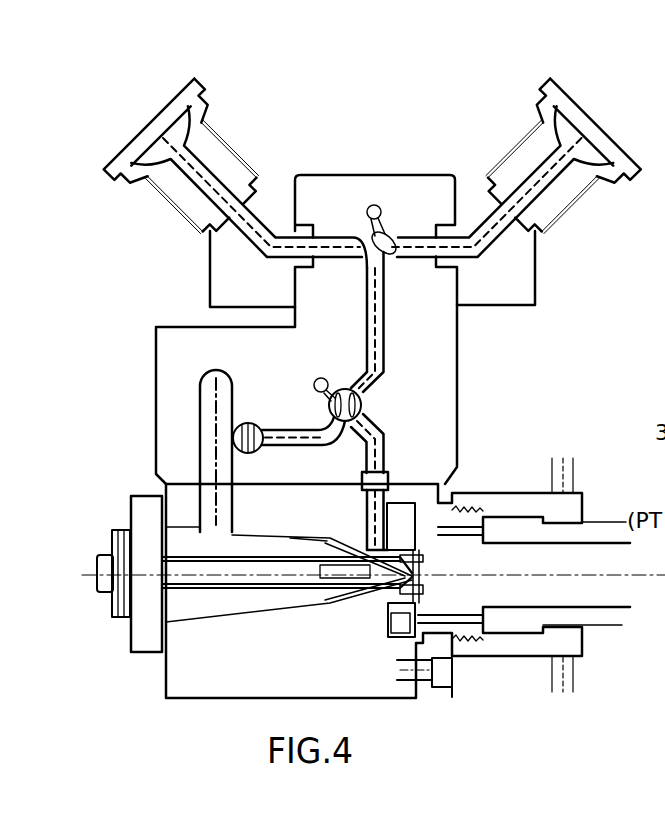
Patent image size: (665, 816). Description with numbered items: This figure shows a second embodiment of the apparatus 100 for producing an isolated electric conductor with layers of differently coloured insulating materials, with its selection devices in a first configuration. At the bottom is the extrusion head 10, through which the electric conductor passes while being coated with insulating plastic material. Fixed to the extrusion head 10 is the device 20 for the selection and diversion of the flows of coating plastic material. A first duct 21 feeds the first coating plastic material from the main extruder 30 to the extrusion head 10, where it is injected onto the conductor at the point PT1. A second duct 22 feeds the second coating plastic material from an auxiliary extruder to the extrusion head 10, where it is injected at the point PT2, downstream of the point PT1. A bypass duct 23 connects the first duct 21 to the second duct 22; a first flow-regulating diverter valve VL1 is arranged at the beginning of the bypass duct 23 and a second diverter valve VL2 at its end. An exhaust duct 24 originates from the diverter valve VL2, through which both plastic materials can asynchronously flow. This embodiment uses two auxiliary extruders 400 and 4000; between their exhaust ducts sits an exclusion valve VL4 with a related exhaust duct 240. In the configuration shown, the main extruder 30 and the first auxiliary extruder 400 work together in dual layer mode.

The first auxiliary extruder 400 is at (137, 110).
The second auxiliary extruder 4000 is at (624, 128).
The apparatus 100 is at (338, 137).
The selection and diversion device 20 is at (375, 174).
The exhaust duct 240 is at (378, 208).
The second duct 22 is at (367, 312).
The bypass duct 23 is at (293, 428).
The exhaust duct 24 is at (316, 381).
The first duct 21 is at (198, 428).
The main extruder 30 is at (156, 440).
The first flow-regulating diverter valve VL1 is at (237, 446).
The second diverter valve VL2 is at (364, 407).
The exclusion valve VL4 is at (386, 255).
The injection point of first material PT1 is at (230, 541).
The injection point of second material PT2 is at (388, 503).
The extrusion head 10 is at (468, 665).